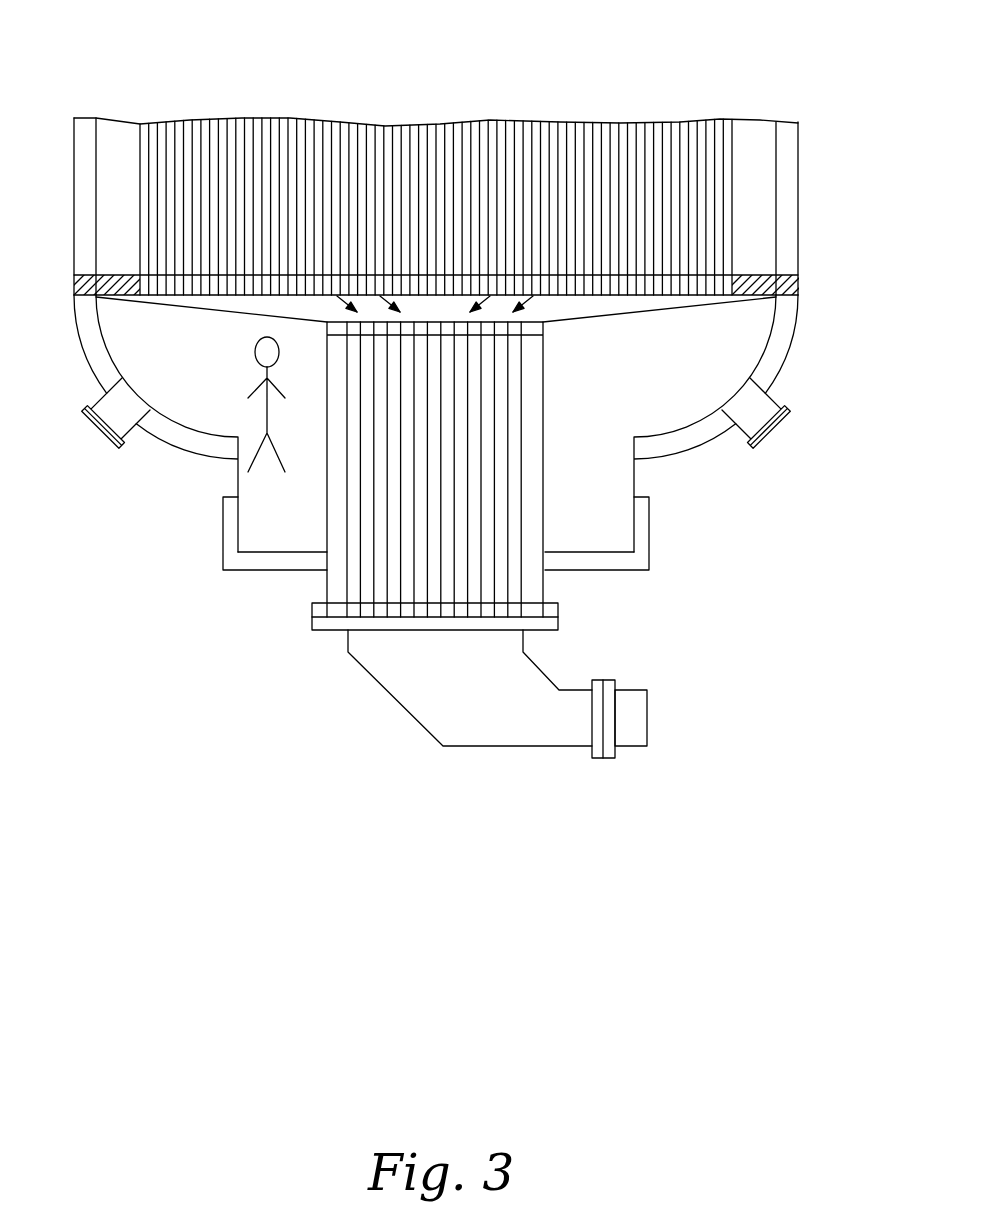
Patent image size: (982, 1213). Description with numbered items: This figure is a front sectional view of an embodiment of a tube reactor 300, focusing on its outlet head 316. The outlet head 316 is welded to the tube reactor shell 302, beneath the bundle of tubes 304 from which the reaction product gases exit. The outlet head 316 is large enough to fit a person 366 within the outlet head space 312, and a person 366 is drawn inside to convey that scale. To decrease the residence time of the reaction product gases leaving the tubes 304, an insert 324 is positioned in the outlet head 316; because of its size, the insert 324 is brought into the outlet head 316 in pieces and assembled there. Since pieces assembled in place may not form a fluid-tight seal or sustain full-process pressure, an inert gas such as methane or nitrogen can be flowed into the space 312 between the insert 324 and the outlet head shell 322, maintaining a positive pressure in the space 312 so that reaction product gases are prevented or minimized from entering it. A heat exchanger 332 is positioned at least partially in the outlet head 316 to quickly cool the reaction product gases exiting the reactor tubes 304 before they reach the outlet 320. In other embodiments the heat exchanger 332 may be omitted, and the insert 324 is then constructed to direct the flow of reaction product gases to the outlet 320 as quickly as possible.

The tube reactor 300 is at (775, 90).
The tube reactor shell 302 is at (800, 222).
The tubes 304 is at (557, 140).
The outlet head space 312 is at (804, 366).
The outlet head 316 is at (492, 413).
The outlet 320 is at (516, 725).
The outlet head shell 322 is at (463, 432).
The insert 324 is at (653, 311).
The heat exchanger 332 is at (543, 495).
The person 366 is at (243, 382).